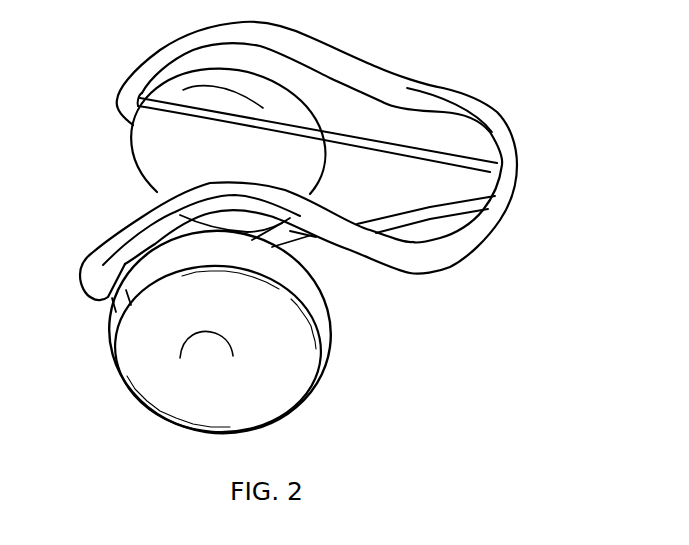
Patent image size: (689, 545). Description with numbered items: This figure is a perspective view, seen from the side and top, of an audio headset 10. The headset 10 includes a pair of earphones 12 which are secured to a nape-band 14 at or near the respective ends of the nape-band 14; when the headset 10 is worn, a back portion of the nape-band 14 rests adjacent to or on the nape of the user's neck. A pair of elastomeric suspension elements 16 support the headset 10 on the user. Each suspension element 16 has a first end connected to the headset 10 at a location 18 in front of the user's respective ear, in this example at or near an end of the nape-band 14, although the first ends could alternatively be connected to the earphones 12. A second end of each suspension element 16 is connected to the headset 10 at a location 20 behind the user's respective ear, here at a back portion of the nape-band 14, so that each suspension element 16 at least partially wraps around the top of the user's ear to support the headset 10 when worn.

The audio headset 10 is at (467, 78).
The earphones 12 is at (152, 166).
The nape-band 14 is at (497, 211).
The elastomeric suspension elements 16 is at (399, 150).
The location in front of a user's ear 18 is at (103, 103).
The location behind the user's ear 20 is at (542, 179).